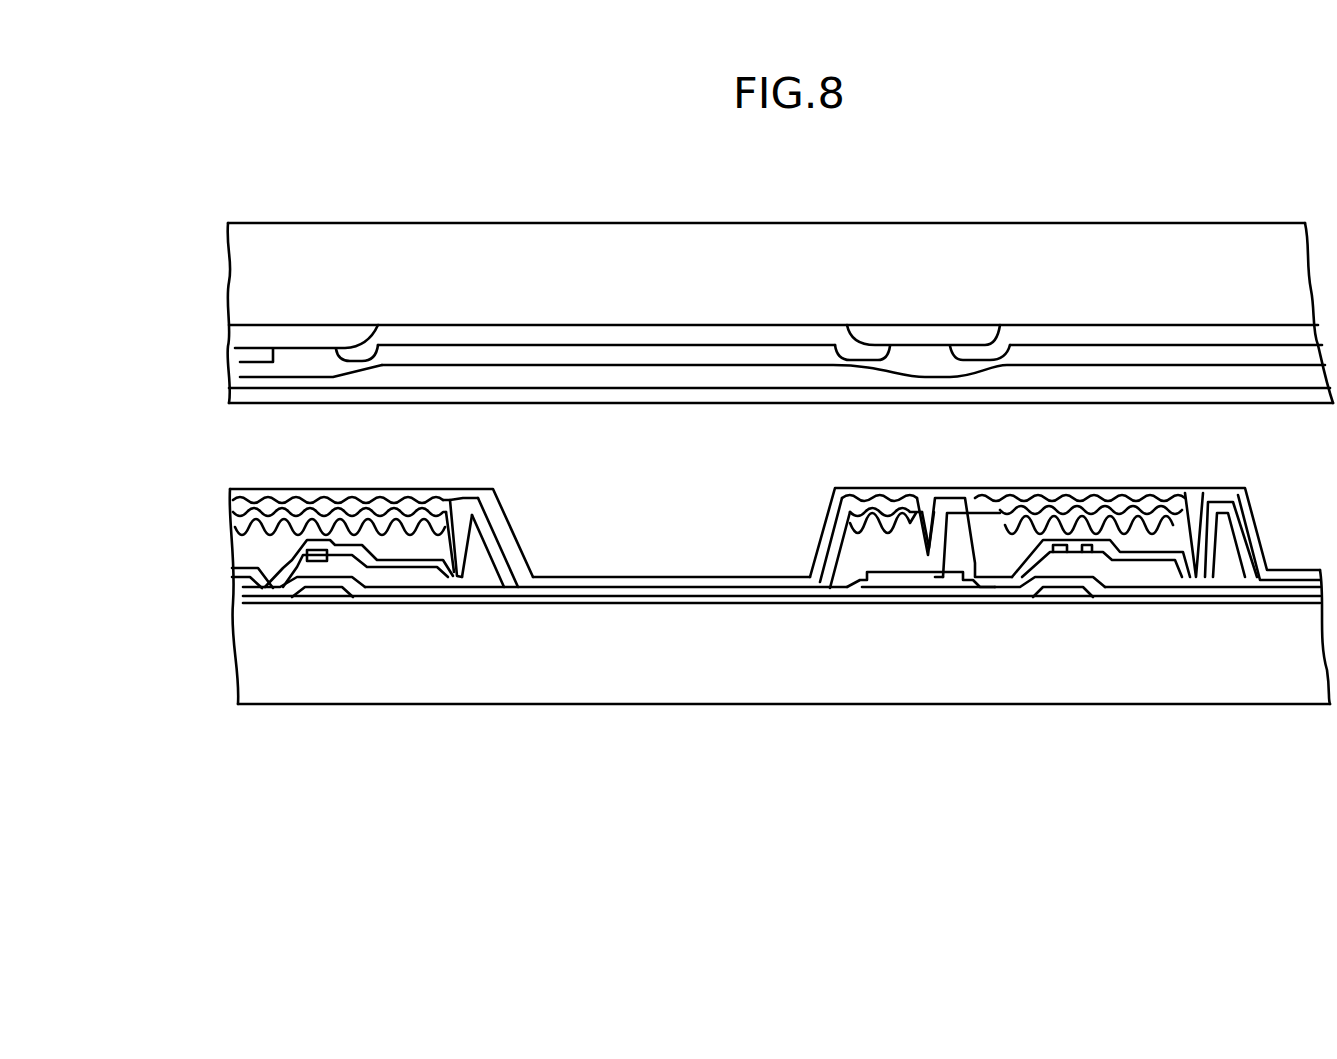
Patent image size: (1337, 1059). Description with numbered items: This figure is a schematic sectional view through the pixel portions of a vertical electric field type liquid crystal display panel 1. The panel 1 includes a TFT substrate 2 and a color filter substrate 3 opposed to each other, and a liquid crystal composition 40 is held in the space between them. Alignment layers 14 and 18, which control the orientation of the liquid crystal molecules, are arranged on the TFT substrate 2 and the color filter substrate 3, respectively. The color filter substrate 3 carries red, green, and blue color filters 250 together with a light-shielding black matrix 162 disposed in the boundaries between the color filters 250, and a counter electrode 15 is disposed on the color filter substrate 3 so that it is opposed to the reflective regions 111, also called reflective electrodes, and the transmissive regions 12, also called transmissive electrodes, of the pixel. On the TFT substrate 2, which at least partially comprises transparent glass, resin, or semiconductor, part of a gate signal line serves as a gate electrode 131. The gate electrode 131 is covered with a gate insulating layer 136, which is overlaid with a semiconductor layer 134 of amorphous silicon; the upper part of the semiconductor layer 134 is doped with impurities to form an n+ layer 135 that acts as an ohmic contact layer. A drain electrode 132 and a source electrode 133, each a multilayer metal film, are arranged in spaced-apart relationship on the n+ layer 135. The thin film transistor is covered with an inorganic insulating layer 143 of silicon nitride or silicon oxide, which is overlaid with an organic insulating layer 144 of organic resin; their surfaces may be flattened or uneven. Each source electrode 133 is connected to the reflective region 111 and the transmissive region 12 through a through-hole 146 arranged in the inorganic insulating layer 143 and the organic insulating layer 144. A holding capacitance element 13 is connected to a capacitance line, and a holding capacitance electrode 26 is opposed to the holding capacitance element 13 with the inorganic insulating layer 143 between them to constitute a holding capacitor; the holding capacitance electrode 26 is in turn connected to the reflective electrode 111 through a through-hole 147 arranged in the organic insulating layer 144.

The liquid crystal display panel 1 is at (740, 707).
The TFT substrate 2 is at (678, 663).
The color filter substrate 3 is at (705, 277).
The transmissive region 12 is at (628, 600).
The holding capacitance element 13 is at (940, 580).
The alignment layer 14 is at (555, 578).
The counter electrode 15 is at (558, 382).
The alignment layer 18 is at (485, 397).
The holding capacitance electrode 26 is at (960, 582).
The liquid crystal composition 40 is at (400, 465).
The reflective region 111 is at (413, 530).
The gate electrode 131 is at (330, 592).
The drain electrode 132 is at (318, 562).
The source electrode 133 is at (372, 568).
The semiconductor layer 134 is at (1090, 562).
The n+ layer 135 is at (1110, 580).
The gate insulating layer 136 is at (352, 580).
The inorganic insulating layer 143 is at (1168, 557).
The organic insulating layer 144 is at (1002, 555).
The through-hole 146 is at (460, 578).
The through-hole 147 is at (912, 568).
The black matrix 162 is at (942, 335).
The color filters 250 is at (765, 345).